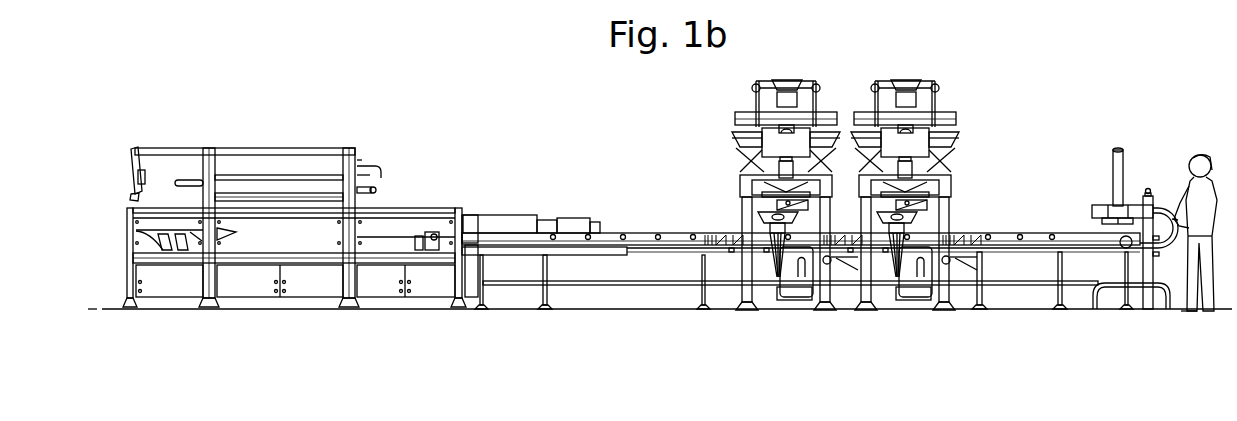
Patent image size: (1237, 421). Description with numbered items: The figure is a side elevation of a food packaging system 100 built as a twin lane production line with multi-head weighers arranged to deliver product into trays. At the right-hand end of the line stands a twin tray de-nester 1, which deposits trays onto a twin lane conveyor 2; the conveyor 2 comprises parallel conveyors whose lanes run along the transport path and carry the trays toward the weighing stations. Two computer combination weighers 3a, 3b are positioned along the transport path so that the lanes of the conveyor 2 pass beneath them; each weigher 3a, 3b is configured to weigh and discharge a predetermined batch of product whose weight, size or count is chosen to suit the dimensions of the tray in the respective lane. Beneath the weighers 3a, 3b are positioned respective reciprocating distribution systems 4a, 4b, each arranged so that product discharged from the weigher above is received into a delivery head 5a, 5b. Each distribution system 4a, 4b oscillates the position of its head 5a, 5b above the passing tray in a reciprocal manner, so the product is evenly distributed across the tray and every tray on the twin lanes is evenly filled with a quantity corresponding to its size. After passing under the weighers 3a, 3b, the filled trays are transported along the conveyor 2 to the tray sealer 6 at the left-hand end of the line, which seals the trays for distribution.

The food packaging system 100 is at (336, 126).
The tray sealer 6 is at (231, 128).
The twin lane conveyor 2 is at (967, 287).
The computer combination weigher 3a is at (768, 137).
The computer combination weigher 3b is at (922, 138).
The delivery head 5a is at (768, 232).
The delivery head 5b is at (922, 232).
The reciprocating distribution system 4a is at (787, 298).
The reciprocating distribution system 4b is at (910, 298).
The twin tray de-nester 1 is at (1168, 180).